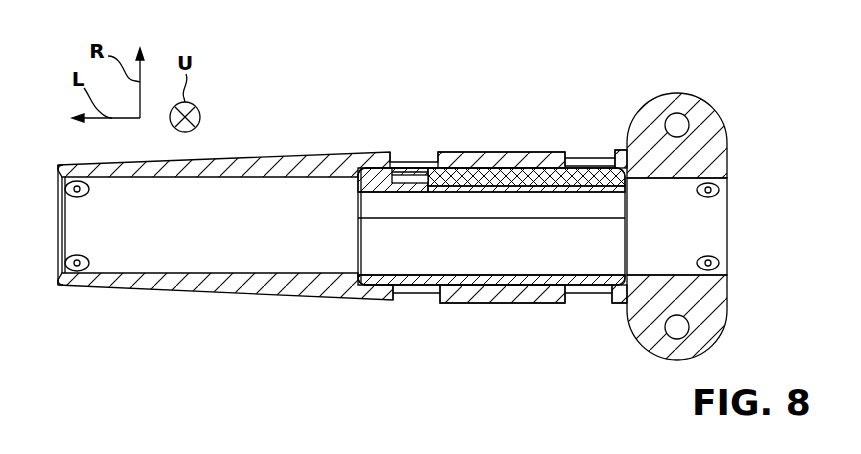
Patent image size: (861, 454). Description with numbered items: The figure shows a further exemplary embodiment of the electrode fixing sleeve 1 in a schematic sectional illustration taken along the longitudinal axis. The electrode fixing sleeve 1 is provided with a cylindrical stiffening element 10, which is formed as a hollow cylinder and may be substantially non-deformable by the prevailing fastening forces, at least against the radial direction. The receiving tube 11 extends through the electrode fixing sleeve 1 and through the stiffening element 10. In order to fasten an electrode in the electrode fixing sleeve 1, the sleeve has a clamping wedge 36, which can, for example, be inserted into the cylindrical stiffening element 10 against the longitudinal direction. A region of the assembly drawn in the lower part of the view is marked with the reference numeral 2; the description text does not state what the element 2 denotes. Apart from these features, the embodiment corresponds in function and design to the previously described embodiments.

The electrode fixing sleeve 1 is at (257, 80).
The cartridge 2 is at (397, 312).
The stiffening element 10 is at (503, 168).
The receiving tube 11 is at (737, 229).
The clamping wedge 36 is at (352, 180).